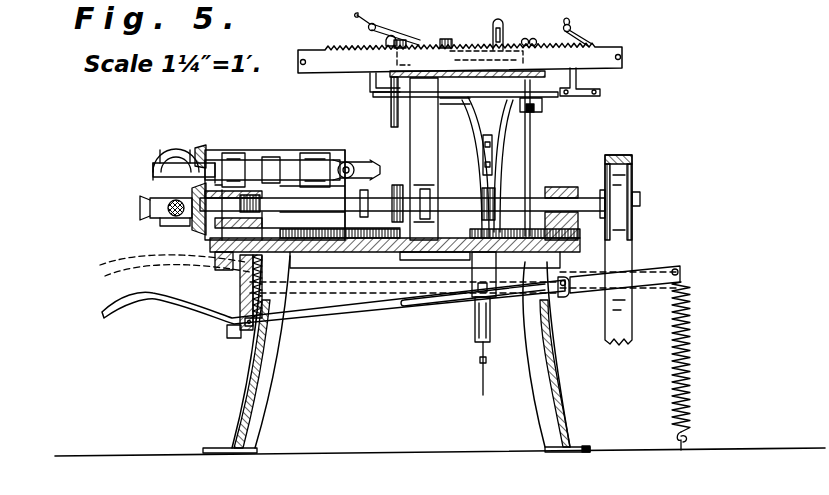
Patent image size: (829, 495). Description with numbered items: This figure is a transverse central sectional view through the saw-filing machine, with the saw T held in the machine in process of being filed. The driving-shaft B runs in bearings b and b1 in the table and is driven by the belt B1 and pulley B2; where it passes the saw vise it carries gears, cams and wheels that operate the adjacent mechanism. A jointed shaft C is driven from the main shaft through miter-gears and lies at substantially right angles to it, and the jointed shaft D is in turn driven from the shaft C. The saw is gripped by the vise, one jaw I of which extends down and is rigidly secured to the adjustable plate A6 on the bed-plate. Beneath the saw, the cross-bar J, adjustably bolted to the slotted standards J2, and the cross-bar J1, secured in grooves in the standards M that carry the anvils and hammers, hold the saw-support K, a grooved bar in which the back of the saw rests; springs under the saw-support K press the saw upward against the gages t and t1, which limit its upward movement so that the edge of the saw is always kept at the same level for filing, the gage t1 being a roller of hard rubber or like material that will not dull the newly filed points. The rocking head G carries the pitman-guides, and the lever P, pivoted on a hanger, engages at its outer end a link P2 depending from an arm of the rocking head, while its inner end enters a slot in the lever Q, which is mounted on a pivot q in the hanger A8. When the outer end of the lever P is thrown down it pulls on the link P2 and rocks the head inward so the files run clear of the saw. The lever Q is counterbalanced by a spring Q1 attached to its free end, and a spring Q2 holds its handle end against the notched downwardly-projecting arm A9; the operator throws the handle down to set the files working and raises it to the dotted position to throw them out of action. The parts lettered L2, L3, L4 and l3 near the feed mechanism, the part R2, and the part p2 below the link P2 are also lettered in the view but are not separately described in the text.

The saw T is at (623, 53).
The lever L2 is at (388, 34).
The bracket L3 is at (369, 90).
The lever L4 is at (583, 37).
The bracket l3 is at (590, 82).
The gage t is at (393, 43).
The gage t1 is at (534, 38).
The gauge R2 is at (495, 33).
The saw-support K is at (468, 76).
The cross-bar J is at (545, 112).
The cross-bar J1 is at (391, 112).
The standards J2 is at (531, 154).
The jaw of saw clamp I is at (476, 112).
The standards M is at (410, 138).
The rocking head G is at (494, 168).
The bearing b is at (566, 187).
The driving-shaft B is at (352, 208).
The belt B1 is at (626, 256).
The pulley B2 is at (633, 224).
The jointed shaft D is at (263, 158).
The jointed shaft C is at (160, 183).
The bearing b1 is at (255, 204).
The lever Q is at (153, 294).
The spring Q1 is at (690, 312).
The spring Q2 is at (245, 283).
The downwardly-projecting arm A9 is at (232, 326).
The adjustable plate A6 is at (426, 252).
The lever P is at (468, 290).
The link P2 is at (475, 322).
The pin p2 is at (480, 358).
The pivot q is at (570, 294).
The hanger A8 is at (571, 271).